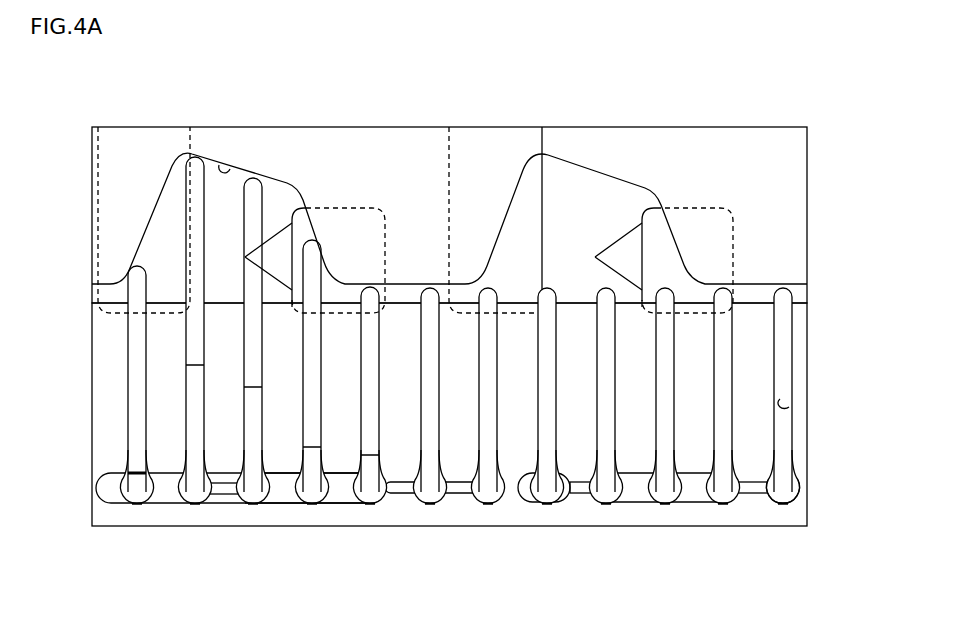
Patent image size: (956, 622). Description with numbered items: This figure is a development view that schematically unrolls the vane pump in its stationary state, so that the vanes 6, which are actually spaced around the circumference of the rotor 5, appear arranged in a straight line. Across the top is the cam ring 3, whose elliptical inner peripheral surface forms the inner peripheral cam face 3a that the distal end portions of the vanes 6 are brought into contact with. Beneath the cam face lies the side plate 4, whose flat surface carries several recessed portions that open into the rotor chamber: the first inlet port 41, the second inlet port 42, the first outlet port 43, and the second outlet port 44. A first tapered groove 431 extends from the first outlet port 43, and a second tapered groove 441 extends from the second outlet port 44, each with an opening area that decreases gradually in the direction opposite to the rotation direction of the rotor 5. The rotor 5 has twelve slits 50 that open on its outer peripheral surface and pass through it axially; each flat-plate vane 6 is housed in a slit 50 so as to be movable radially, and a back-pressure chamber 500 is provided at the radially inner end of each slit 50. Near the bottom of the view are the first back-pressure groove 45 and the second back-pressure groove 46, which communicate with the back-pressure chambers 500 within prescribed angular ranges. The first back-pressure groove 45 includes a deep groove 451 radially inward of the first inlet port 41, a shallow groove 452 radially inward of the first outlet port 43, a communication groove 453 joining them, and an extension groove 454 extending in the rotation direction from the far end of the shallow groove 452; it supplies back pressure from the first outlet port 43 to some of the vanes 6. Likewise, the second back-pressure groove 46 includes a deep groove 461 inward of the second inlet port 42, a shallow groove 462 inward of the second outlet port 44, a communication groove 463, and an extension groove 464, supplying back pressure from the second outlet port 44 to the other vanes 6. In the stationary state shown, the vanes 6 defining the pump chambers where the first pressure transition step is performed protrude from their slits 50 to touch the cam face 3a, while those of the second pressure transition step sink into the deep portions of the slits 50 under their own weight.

The cam ring 3 is at (750, 137).
The inner peripheral cam face 3a is at (222, 166).
The side plate 4 is at (622, 192).
The first inlet port 41 is at (177, 173).
The second inlet port 42 is at (513, 225).
The first outlet port 43 is at (330, 267).
The second outlet port 44 is at (660, 247).
The first tapered groove 431 is at (283, 245).
The second tapered groove 441 is at (628, 247).
The first back-pressure groove 45 is at (289, 545).
The deep groove 451 is at (163, 497).
The shallow groove 452 is at (335, 495).
The communication groove 453 is at (223, 487).
The extension groove 454 is at (408, 530).
The second back-pressure groove 46 is at (645, 545).
The deep groove 461 is at (562, 501).
The shallow groove 462 is at (700, 493).
The communication groove 463 is at (580, 488).
The extension groove 464 is at (748, 530).
The rotor 5 is at (104, 380).
The slit 50 is at (780, 399).
The back-pressure chamber 500 is at (795, 482).
The vane 6 is at (782, 345).